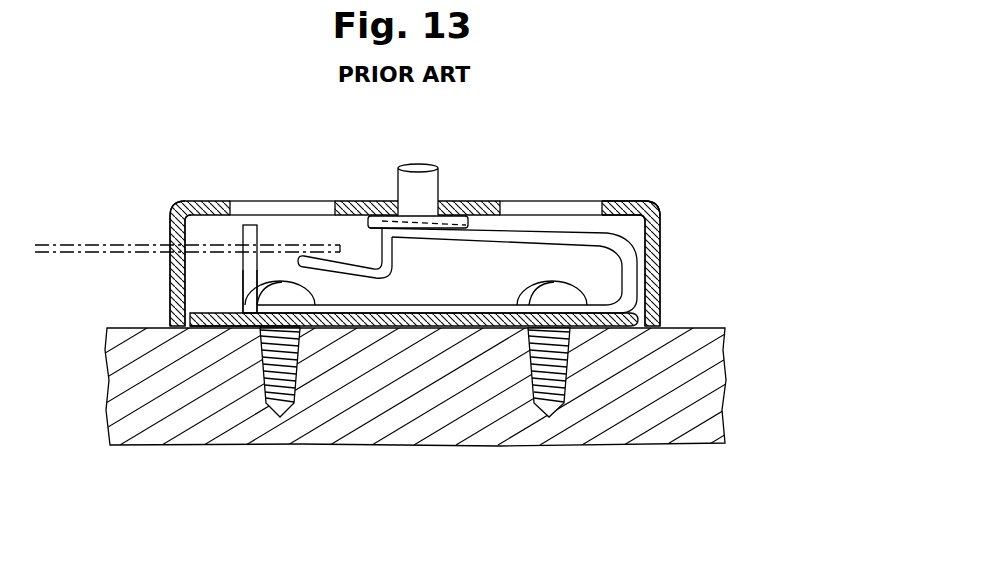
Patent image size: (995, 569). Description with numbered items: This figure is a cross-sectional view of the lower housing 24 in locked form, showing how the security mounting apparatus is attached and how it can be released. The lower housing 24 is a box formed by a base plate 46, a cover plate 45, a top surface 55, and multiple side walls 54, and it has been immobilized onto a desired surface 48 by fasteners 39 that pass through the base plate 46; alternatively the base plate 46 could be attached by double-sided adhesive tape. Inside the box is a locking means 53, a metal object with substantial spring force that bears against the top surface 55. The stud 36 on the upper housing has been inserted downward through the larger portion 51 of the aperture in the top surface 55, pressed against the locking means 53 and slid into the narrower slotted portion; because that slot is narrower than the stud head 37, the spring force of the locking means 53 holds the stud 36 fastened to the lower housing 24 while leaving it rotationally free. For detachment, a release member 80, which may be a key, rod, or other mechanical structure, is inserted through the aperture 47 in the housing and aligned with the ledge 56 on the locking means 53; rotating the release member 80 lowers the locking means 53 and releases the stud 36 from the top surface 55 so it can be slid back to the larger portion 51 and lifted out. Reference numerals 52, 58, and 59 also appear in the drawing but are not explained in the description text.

The lower housing 24 is at (427, 285).
The stud 36 is at (398, 176).
The stud head 37 is at (424, 231).
The fasteners 39 is at (297, 395).
The cover plate 45 is at (640, 198).
The base plate 46 is at (230, 330).
The aperture 47 is at (427, 229).
The desired surface 48 is at (727, 377).
The larger portion 51 is at (625, 312).
The base plate 52 is at (410, 406).
The locking means 53 is at (502, 365).
The side walls 54 is at (170, 307).
The top surface 55 is at (289, 202).
The ledge 56 is at (357, 318).
The guide pin lower portion 58 is at (245, 280).
The guide pin 59 is at (186, 222).
The release member 80 is at (90, 242).